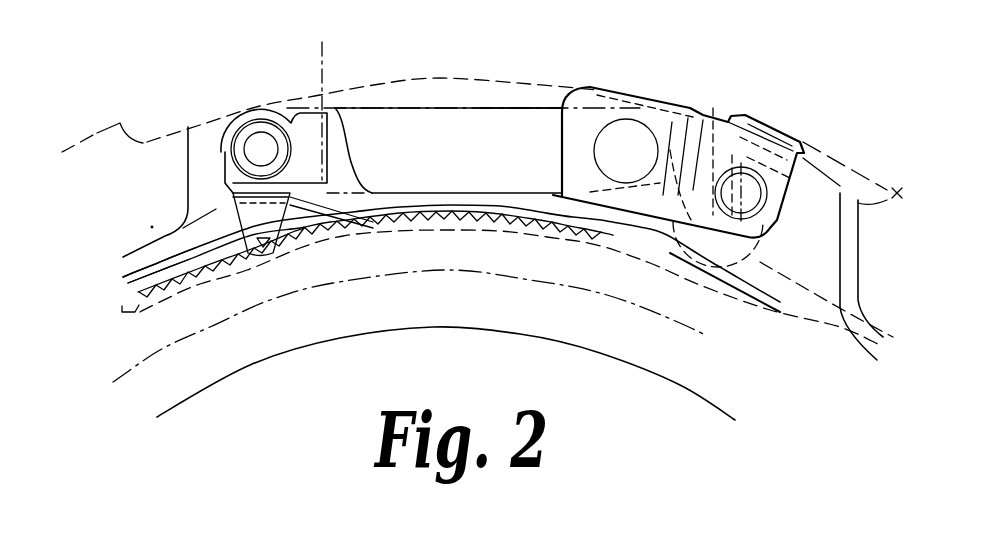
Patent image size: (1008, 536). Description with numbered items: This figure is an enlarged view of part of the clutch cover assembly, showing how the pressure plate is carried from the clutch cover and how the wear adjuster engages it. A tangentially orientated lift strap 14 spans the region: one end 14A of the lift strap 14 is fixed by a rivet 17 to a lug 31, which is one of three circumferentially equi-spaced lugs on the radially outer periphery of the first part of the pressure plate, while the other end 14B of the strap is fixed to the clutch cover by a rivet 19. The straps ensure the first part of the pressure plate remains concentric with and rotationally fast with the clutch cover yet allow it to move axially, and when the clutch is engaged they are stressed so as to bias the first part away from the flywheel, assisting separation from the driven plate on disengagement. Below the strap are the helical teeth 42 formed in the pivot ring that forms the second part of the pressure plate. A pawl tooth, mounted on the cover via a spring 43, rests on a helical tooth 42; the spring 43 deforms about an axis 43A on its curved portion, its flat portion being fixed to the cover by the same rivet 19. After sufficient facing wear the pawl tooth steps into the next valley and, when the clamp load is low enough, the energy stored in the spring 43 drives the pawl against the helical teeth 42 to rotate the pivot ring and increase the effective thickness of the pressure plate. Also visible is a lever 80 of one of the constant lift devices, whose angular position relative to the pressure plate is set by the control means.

The lift strap 14 is at (428, 123).
The one end of lift strap 14A is at (540, 122).
The other end of lift strap 14B is at (355, 117).
The rivet 17 is at (632, 137).
The rivet 19 is at (262, 147).
The lug 31 is at (580, 100).
The helical tooth 42 is at (171, 284).
The spring 43 is at (307, 120).
The axis 43A is at (320, 60).
The lever 80 is at (733, 286).